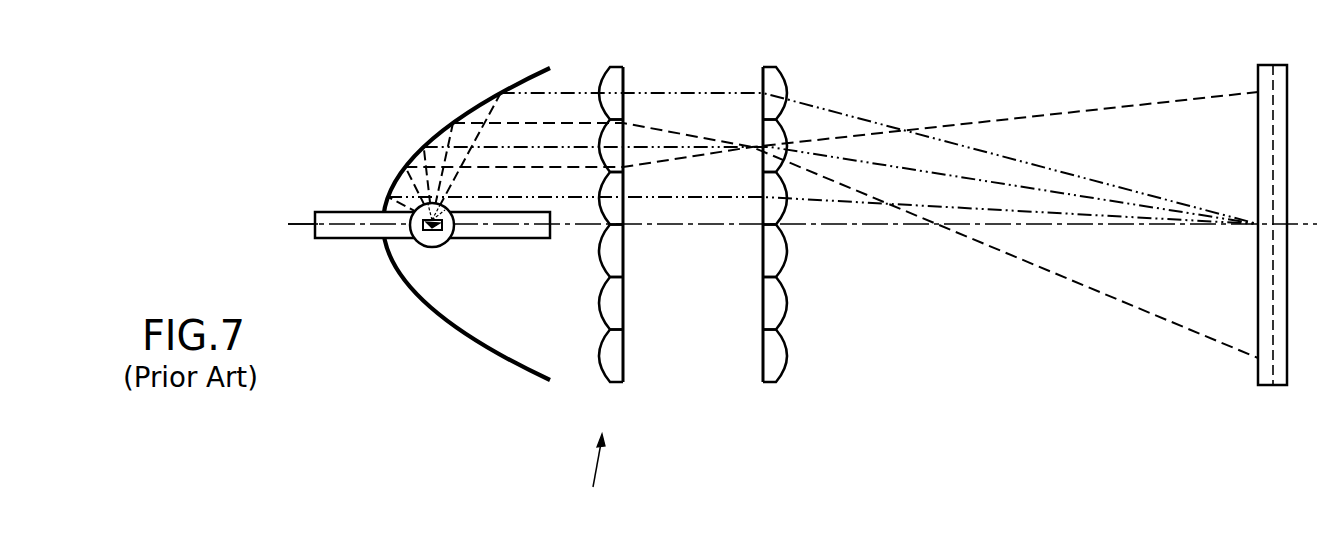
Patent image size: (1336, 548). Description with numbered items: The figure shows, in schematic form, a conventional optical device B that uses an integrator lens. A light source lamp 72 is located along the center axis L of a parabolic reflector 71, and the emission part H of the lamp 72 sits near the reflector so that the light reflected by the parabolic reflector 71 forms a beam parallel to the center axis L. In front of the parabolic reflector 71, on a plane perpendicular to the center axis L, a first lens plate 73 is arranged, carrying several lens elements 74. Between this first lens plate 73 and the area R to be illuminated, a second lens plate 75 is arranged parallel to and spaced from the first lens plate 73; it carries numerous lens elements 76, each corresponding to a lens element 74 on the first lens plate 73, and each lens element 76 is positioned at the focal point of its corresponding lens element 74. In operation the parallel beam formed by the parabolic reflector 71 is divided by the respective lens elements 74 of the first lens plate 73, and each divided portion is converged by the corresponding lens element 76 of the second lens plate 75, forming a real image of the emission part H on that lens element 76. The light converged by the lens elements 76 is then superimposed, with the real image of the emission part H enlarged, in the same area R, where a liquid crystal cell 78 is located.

The parabolic reflector 71 is at (468, 345).
The light source lamp 72 is at (347, 212).
The first lens plate 73 is at (640, 242).
The lens element 74 is at (625, 300).
The second lens plate 75 is at (799, 242).
The lens element 76 is at (780, 300).
The liquid crystal cell 78 is at (1238, 225).
The emission part H is at (432, 231).
The center axis L is at (297, 229).
The area to be illuminated R is at (1272, 82).
The optical device B is at (598, 476).